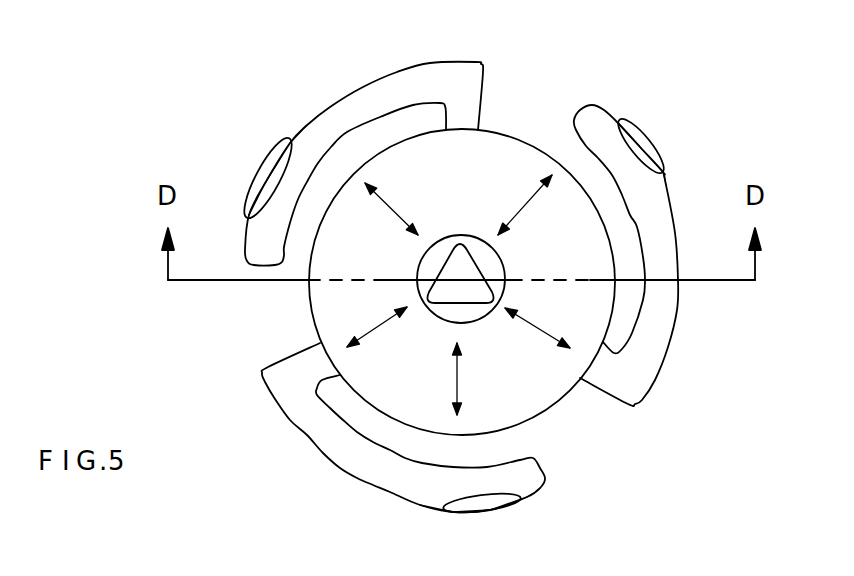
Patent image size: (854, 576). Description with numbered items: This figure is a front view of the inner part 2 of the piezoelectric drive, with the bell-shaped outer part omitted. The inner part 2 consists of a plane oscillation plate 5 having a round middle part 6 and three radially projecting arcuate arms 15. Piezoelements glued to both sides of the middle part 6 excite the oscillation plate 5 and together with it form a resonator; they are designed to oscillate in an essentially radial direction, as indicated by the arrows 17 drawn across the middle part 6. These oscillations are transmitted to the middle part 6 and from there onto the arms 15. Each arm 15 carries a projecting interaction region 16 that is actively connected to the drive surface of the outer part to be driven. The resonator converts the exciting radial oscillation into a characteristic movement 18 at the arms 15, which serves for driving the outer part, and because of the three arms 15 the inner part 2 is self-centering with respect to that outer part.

The inner part 2 is at (242, 338).
The oscillation plate 5 is at (482, 197).
The round middle part 6 is at (532, 130).
The arms 15 is at (413, 83).
The interaction region 16 is at (256, 176).
The arrows 17 is at (458, 295).
The characteristic movement 18 is at (265, 153).